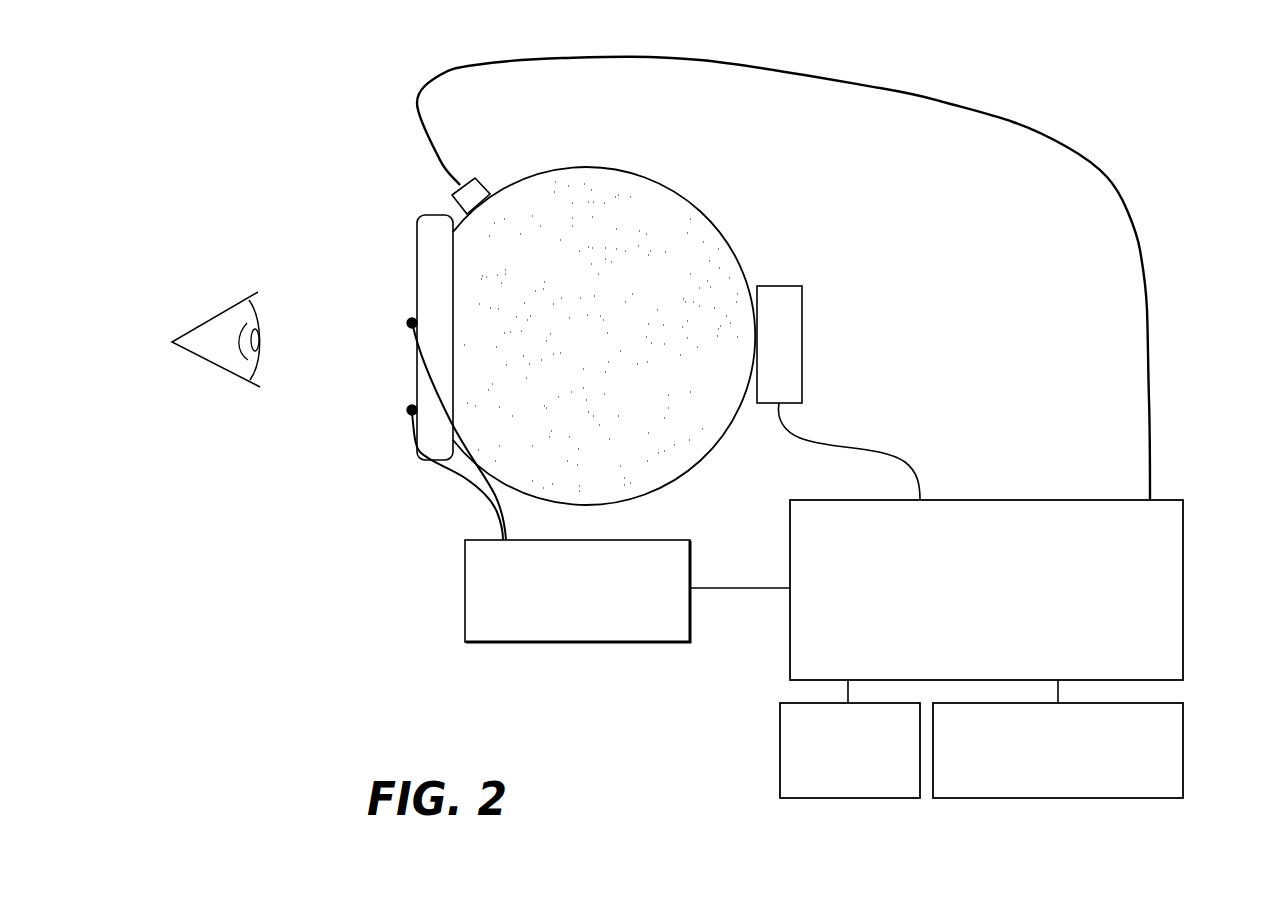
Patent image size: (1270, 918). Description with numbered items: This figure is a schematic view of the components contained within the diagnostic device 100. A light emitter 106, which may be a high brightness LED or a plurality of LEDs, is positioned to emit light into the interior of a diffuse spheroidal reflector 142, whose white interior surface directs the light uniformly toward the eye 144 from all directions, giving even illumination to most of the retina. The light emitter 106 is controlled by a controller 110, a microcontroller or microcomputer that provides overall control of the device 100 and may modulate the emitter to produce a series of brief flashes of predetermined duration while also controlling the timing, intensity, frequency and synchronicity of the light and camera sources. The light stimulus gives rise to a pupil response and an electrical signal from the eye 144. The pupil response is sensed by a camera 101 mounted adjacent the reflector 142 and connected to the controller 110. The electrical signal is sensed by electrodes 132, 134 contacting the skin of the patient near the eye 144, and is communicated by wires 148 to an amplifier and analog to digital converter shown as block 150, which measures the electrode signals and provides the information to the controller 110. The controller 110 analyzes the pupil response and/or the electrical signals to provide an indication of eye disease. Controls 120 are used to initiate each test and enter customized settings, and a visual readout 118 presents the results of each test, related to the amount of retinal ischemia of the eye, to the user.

The device 100 is at (1162, 131).
The camera 101 is at (786, 343).
The light emitter 106 is at (480, 183).
The controller 110 is at (974, 611).
The visual readout 118 is at (1078, 800).
The controls 120 is at (868, 799).
The electrode 132 is at (408, 410).
The electrode 134 is at (410, 308).
The diffuse spheroidal reflector 142 is at (714, 223).
The eye 144 is at (210, 350).
The wires 148 is at (470, 480).
The amplifier and analog to digital converter 150 is at (538, 643).